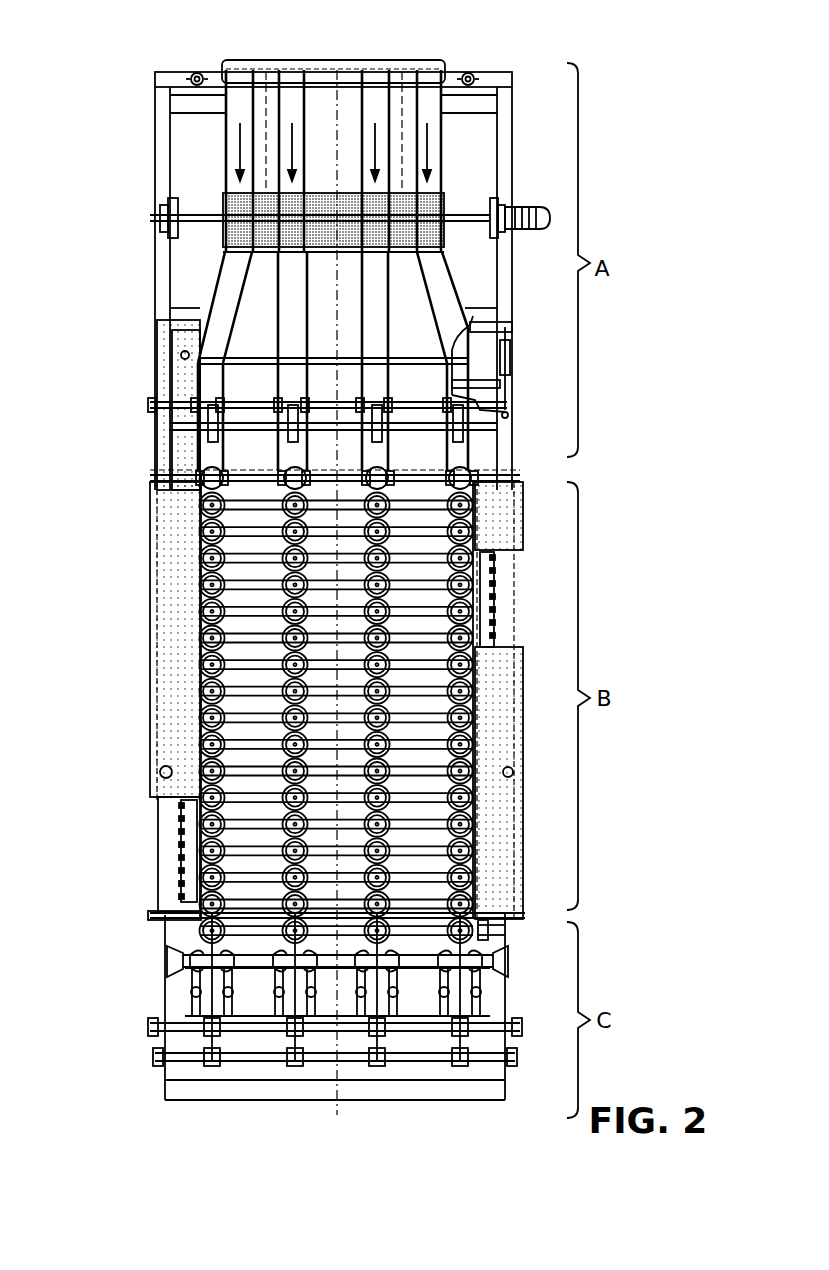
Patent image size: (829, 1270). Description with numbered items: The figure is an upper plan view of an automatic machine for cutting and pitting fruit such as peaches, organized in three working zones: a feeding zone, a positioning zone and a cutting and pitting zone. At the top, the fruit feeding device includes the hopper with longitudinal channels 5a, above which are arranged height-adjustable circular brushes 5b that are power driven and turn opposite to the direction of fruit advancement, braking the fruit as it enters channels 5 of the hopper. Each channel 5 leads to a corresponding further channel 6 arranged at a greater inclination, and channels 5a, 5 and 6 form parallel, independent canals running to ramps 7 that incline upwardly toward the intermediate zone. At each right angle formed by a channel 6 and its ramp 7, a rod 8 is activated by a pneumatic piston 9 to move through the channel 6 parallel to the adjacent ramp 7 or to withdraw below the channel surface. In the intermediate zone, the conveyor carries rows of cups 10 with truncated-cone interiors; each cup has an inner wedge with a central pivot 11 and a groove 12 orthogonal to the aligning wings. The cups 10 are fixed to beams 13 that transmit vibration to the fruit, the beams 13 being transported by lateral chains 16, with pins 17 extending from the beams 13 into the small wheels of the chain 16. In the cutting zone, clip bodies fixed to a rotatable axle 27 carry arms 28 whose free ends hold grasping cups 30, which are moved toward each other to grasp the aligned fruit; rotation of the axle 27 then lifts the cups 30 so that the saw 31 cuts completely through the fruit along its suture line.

The channels 5 is at (297, 277).
The longitudinal channels 5a is at (437, 103).
The circular brushes 5b is at (380, 203).
The further channels 6 is at (212, 377).
The ramps 7 is at (263, 117).
The rods 8 is at (212, 431).
The pneumatic pistons 9 is at (507, 373).
The cups 10 is at (201, 676).
The central pivot 11 is at (488, 560).
The groove 12 is at (209, 664).
The beams 13 is at (242, 611).
The lateral chains 16 is at (185, 848).
The pins 17 is at (500, 935).
The rotatable axle 27 is at (407, 1030).
The arms 28 is at (201, 976).
The grasping cups 30 is at (193, 957).
The saw 31 is at (473, 965).